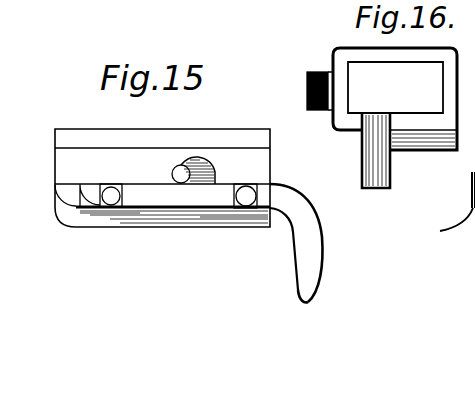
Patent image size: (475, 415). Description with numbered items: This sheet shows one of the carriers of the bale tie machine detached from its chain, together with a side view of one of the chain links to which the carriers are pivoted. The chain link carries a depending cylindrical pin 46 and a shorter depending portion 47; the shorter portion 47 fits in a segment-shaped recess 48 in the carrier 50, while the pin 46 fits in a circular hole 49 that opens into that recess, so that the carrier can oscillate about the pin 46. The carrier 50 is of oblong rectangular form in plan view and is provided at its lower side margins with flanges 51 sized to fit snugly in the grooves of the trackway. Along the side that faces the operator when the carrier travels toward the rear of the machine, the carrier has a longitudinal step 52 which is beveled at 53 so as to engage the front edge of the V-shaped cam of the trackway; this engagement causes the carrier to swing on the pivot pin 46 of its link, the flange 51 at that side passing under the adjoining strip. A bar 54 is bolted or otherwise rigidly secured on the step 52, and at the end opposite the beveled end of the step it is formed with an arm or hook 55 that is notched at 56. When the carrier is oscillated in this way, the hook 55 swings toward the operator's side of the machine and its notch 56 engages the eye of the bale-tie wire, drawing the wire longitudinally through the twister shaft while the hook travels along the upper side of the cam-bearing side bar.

In FIG. 16, the depending cylindrical pin 46 is at (382, 190).
In FIG. 16, the shorter depending portion 47 is at (420, 140).
In FIG. 15, the segment-shaped recess 48 is at (213, 174).
In FIG. 15, the circular hole 49 is at (180, 183).
In FIG. 15, the carrier 50 is at (218, 169).
In FIG. 15, the flange 51 is at (220, 140).
In FIG. 15, the longitudinal step 52 is at (79, 207).
In FIG. 15, the bevel 53 is at (55, 203).
In FIG. 15, the bar 54 is at (142, 210).
In FIG. 15, the arm or hook 55 is at (316, 275).
In FIG. 15, the notch 56 is at (298, 288).